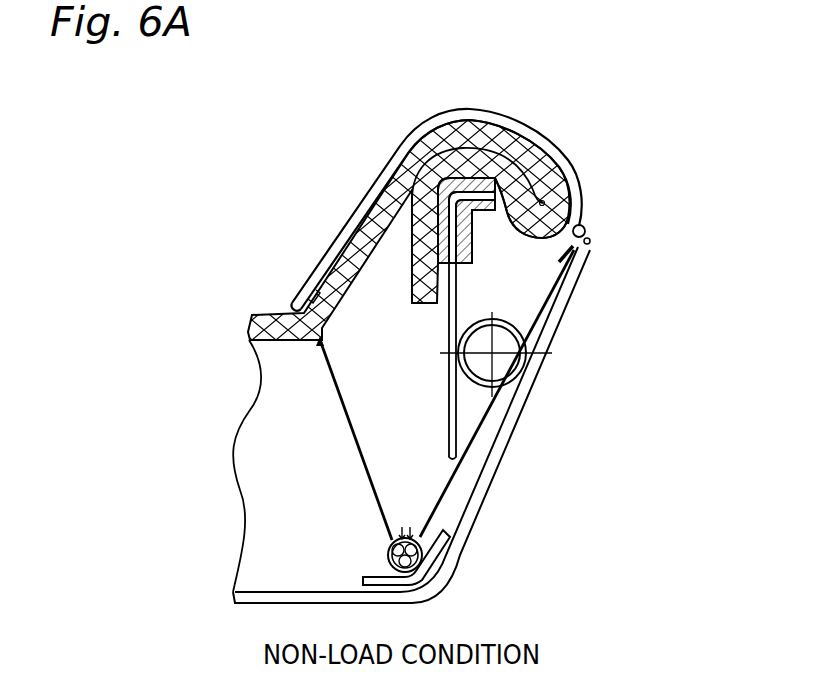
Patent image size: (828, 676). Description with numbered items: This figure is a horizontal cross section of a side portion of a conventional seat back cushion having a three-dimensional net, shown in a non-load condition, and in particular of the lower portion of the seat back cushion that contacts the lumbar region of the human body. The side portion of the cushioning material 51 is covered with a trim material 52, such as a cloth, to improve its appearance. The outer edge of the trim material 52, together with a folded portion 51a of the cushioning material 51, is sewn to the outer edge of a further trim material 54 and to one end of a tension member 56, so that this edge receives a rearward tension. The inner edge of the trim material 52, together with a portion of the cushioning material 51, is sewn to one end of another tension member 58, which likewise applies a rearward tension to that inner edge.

The cushioning material 51 is at (278, 318).
The folded portion of the cushioning material 51a is at (566, 200).
The trim material 52 is at (483, 110).
The trim material 54 is at (497, 466).
The tension member 56 is at (447, 492).
The tension member 58 is at (360, 441).